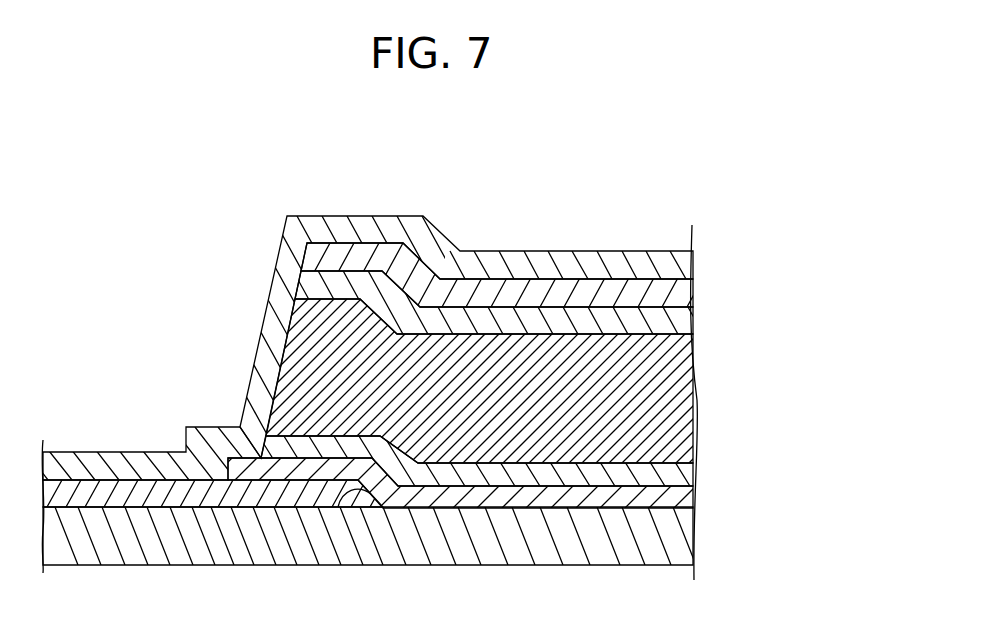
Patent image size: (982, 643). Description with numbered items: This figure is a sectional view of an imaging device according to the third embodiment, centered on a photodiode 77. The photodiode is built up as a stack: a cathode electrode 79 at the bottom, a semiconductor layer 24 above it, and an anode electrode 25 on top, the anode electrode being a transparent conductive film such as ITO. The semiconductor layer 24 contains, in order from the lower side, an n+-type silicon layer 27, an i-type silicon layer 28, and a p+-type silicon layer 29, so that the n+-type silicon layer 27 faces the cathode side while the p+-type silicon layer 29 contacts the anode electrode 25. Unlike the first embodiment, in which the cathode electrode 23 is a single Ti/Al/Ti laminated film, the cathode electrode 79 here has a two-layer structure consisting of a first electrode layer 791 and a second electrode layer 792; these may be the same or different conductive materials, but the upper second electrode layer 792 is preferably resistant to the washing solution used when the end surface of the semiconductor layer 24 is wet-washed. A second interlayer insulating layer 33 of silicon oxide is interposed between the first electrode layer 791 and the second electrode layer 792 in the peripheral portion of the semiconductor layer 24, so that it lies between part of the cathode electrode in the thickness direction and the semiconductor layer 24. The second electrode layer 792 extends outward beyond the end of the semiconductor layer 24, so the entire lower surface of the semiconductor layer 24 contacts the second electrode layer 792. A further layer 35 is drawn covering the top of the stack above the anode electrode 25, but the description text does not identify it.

The photodiode 77 is at (478, 305).
The semiconductor layer 24 is at (478, 380).
The n+-type silicon layer 27 is at (677, 475).
The i-type silicon layer 28 is at (680, 402).
The p+-type silicon layer 29 is at (529, 304).
The anode electrode 25 is at (611, 283).
The gate electrode 35 is at (662, 263).
The second interlayer insulating layer 33 is at (147, 482).
The cathode electrode 23 is at (98, 537).
The cathode electrode 79 is at (447, 517).
The first electrode layer 791 is at (683, 545).
The second electrode layer 792 is at (677, 497).